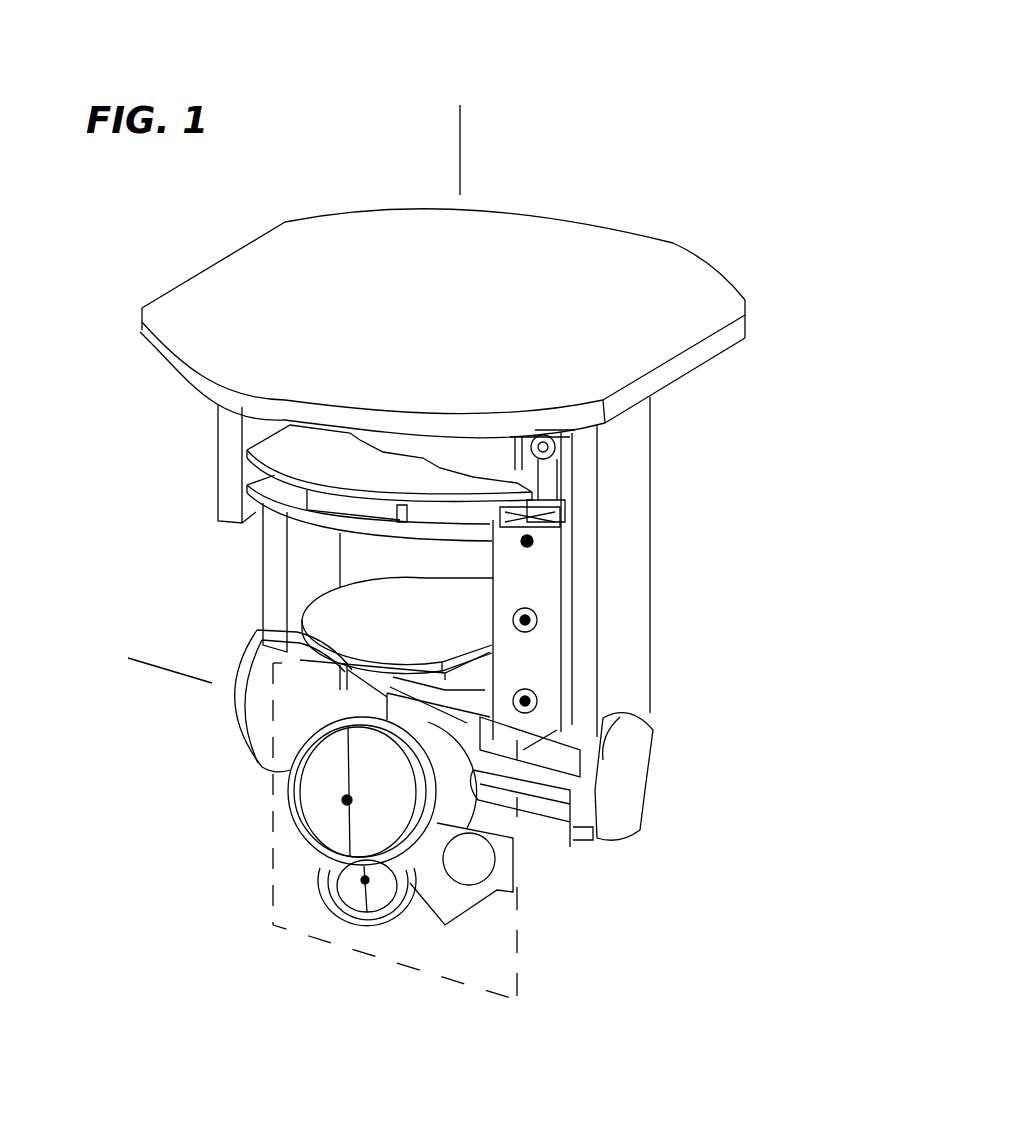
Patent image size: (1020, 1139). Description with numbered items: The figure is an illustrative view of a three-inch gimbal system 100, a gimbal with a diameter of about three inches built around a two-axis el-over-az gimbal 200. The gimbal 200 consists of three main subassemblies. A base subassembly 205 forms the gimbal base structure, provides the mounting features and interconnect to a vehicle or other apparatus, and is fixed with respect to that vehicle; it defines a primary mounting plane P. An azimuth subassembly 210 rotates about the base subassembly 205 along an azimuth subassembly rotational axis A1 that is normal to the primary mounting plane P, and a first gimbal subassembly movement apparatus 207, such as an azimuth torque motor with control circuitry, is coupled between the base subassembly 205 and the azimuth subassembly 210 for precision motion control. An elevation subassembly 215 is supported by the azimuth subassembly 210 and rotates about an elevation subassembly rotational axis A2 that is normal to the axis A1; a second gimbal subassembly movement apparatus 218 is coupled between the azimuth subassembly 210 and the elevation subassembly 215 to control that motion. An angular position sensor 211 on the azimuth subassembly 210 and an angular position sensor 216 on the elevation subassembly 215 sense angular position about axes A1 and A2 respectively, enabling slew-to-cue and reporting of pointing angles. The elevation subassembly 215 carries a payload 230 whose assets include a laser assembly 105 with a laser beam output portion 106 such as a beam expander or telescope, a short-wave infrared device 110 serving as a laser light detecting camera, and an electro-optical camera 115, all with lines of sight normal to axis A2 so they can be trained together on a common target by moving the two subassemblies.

The 3-inch gimbal system 100 is at (548, 145).
The two-axis el-over-az gimbal 200 is at (570, 255).
The base subassembly 205 is at (275, 247).
The primary mounting plane P is at (673, 275).
The azimuth subassembly rotational axis A1 is at (460, 148).
The elevation subassembly rotational axis A2 is at (157, 668).
The first gimbal subassembly movement apparatus 207 is at (487, 452).
The azimuth subassembly 210 is at (220, 487).
The laser assembly 105 is at (620, 497).
The angular position sensor 211 is at (355, 509).
The angular position sensor 216 is at (307, 692).
The second gimbal subassembly movement apparatus 218 is at (307, 703).
The elevation subassembly 215 is at (480, 733).
The laser beam output portion 106 is at (440, 770).
The short-wave infrared (SWIR) device 110 is at (347, 910).
The electro-optical (EO) camera 115 is at (462, 867).
The payload 230 is at (463, 983).